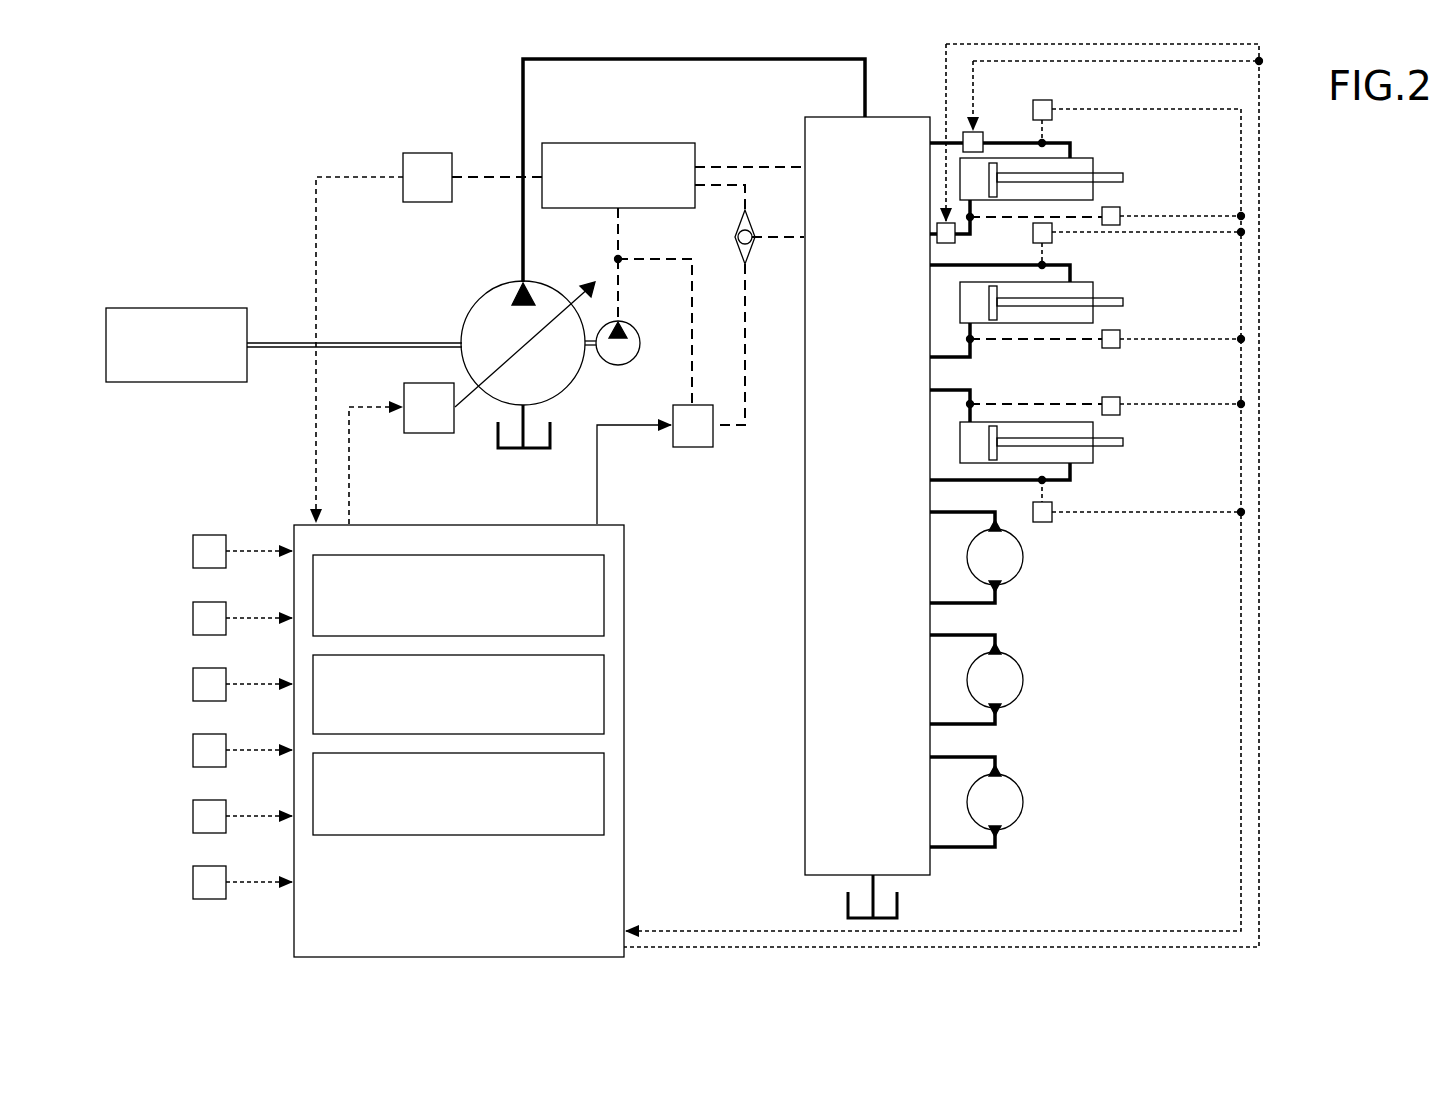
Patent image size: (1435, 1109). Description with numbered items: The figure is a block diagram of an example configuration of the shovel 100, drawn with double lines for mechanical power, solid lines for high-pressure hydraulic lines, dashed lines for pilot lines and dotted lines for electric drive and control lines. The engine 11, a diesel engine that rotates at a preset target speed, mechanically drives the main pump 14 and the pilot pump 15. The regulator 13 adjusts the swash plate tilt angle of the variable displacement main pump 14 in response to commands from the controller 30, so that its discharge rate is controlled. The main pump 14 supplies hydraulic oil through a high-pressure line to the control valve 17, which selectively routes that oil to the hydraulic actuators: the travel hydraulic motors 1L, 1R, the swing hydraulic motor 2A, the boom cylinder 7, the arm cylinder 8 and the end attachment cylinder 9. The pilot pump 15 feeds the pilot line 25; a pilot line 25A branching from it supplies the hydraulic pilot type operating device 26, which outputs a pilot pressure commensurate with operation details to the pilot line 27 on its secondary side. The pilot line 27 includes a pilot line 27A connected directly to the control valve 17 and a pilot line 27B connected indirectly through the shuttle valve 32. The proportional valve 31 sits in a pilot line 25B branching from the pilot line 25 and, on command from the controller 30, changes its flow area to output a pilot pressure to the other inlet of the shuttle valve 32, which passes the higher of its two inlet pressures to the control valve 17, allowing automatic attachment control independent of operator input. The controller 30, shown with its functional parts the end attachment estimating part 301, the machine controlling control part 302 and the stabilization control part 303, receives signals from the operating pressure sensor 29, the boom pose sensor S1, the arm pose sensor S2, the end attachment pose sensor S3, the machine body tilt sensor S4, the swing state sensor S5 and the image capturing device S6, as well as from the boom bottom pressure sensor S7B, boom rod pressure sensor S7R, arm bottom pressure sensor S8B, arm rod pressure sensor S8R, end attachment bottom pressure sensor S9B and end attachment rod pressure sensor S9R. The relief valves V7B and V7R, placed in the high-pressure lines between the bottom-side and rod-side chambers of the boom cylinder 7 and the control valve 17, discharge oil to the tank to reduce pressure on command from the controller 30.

The shovel 100 is at (113, 112).
The engine 11 is at (183, 308).
The regulator 13 is at (423, 433).
The main pump 14 is at (463, 330).
The pilot pump 15 is at (620, 366).
The control valve 17 is at (878, 117).
The pilot line 25 is at (679, 306).
The pilot line 25A is at (622, 234).
The pilot line 25B is at (698, 346).
The operating device 26 is at (630, 143).
The pilot line 27 is at (748, 136).
The pilot line 27A is at (770, 165).
The pilot line 27B is at (719, 154).
The operating pressure sensor 29 is at (413, 153).
The controller 30 is at (487, 726).
The end attachment estimating part 301 is at (603, 593).
The machine controlling control part 302 is at (603, 690).
The stabilization control part 303 is at (603, 789).
The proportional valve 31 is at (700, 447).
The shuttle valve 32 is at (755, 250).
The boom cylinder 7 is at (1093, 168).
The arm cylinder 8 is at (1093, 292).
The end attachment cylinder 9 is at (1093, 452).
The travel hydraulic motor 1L is at (1020, 570).
The travel hydraulic motor 1R is at (1020, 693).
The swing hydraulic motor 2A is at (1020, 815).
The boom pose sensor S1 is at (208, 535).
The arm pose sensor S2 is at (208, 602).
The end attachment pose sensor S3 is at (208, 668).
The machine body tilt sensor S4 is at (208, 734).
The swing state sensor S5 is at (208, 800).
The image capturing device S6 is at (208, 866).
The boom rod pressure sensor S7R is at (1052, 100).
The boom bottom pressure sensor S7B is at (1120, 207).
The arm rod pressure sensor S8R is at (1052, 243).
The arm bottom pressure sensor S8B is at (1120, 330).
The end attachment rod pressure sensor S9R is at (1045, 522).
The end attachment bottom pressure sensor S9B is at (1120, 397).
The relief valve V7R is at (983, 132).
The relief valve V7B is at (950, 244).